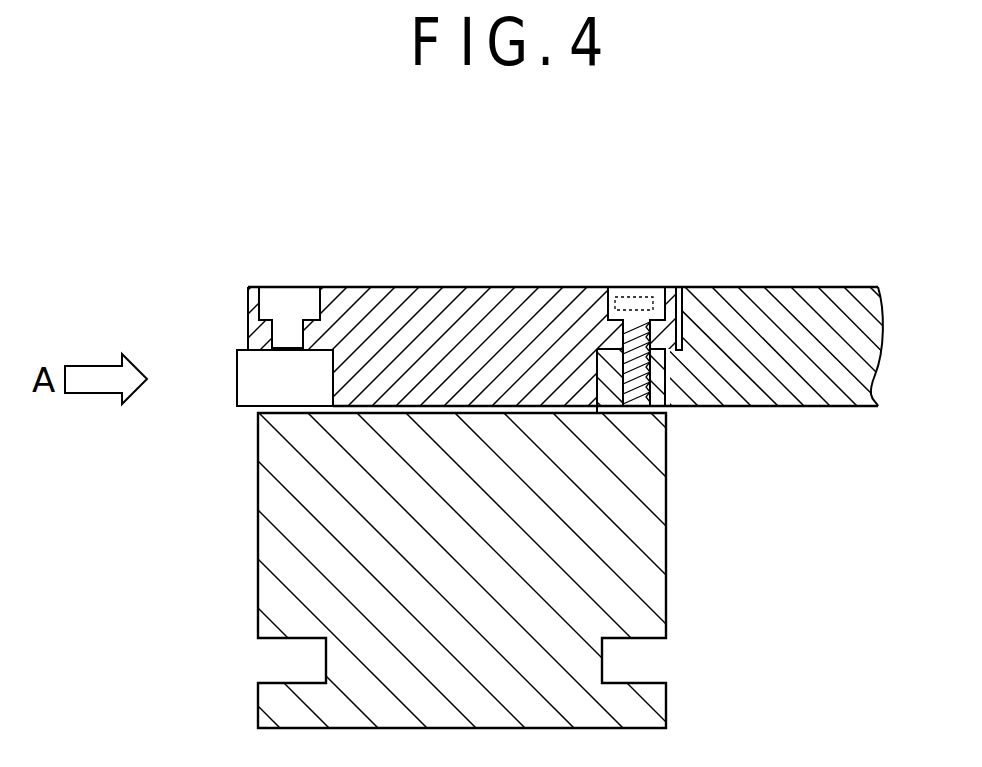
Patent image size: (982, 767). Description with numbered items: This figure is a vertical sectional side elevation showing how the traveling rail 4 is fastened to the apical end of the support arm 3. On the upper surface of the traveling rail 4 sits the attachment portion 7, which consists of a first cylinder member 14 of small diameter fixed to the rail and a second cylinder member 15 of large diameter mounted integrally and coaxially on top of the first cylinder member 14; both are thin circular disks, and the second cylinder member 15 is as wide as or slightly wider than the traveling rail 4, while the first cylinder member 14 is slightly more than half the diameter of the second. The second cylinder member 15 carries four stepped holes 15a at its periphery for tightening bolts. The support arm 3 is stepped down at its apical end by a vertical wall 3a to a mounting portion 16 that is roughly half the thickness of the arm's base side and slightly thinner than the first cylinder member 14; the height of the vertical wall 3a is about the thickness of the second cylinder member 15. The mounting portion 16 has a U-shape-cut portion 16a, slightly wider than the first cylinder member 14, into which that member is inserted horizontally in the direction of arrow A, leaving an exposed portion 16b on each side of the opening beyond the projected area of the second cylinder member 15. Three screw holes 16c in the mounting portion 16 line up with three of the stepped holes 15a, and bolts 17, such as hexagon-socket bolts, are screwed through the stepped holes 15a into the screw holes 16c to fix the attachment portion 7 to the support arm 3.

The support arm 3 is at (793, 287).
The vertical wall 3a is at (673, 287).
The traveling rail 4 is at (667, 585).
The attachment portion 7 is at (490, 240).
The first cylinder member 14 is at (333, 375).
The second cylinder member 15 is at (412, 287).
The stepped hole 15a is at (278, 287).
The mounting portion 16 is at (287, 413).
The U-shape-cut portion 16a is at (598, 394).
The exposed portion 16b is at (236, 363).
The screw hole 16c is at (672, 405).
The bolt 17 is at (630, 295).